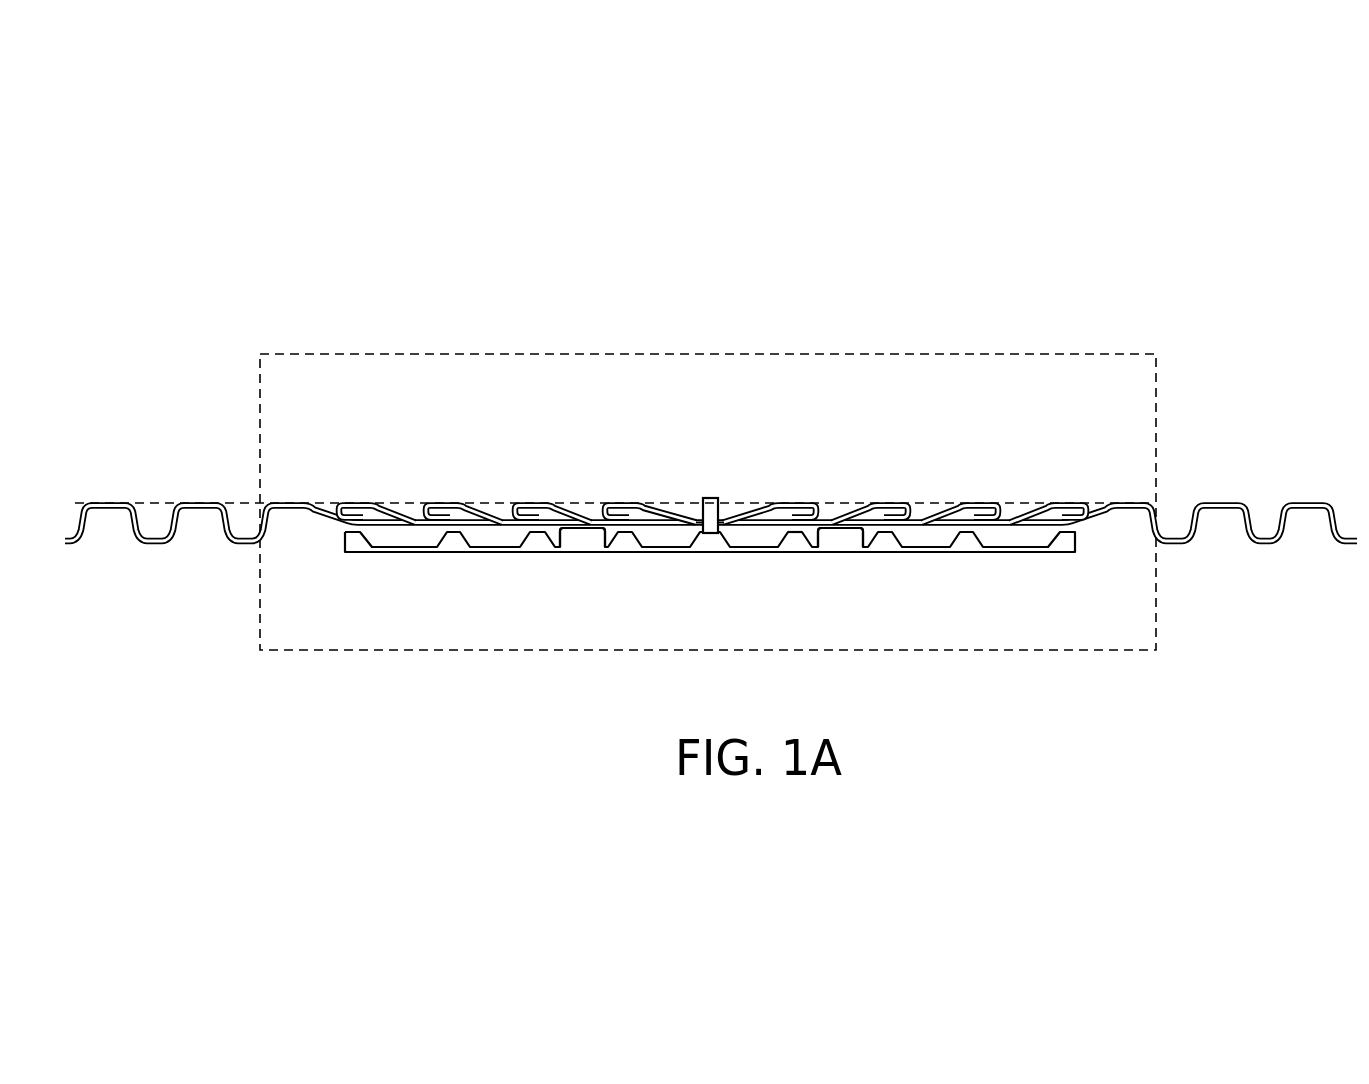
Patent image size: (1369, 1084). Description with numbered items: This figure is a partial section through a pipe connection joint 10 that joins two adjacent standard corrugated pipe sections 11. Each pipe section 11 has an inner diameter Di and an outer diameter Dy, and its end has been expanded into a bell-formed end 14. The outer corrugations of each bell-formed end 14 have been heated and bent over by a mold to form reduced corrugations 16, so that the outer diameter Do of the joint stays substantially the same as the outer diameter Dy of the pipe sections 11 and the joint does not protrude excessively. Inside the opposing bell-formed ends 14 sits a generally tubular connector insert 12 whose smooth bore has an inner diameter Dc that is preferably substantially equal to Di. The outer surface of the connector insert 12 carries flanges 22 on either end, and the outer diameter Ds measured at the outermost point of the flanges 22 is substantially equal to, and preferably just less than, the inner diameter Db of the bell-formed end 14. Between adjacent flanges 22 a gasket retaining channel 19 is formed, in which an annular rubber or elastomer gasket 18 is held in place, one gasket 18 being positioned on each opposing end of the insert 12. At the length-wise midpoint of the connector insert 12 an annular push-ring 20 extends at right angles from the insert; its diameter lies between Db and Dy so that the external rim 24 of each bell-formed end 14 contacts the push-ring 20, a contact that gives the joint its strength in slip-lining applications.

The pipe connection joint 10 is at (800, 342).
The standard pipe sections 11 is at (178, 486).
The connector insert 12 is at (1022, 571).
The bell-formed ends 14 is at (1155, 498).
The reduced corrugations 16 is at (447, 502).
The gasket 18 is at (558, 549).
The gasket retaining channel 19 is at (930, 547).
The push-ring 20 is at (712, 527).
The flange 22 is at (795, 533).
The external rim 24 is at (699, 498).
The inner diameter of standard pipe sections Di is at (109, 549).
The outer diameter of standard pipe sections Dy is at (155, 510).
The inner diameter of bell-formed end Db is at (453, 540).
The inner diameter of connector insert Dc is at (497, 560).
The outer diameter of pipe connection joint Do is at (582, 515).
The outer diameter of connector insert Ds is at (625, 540).